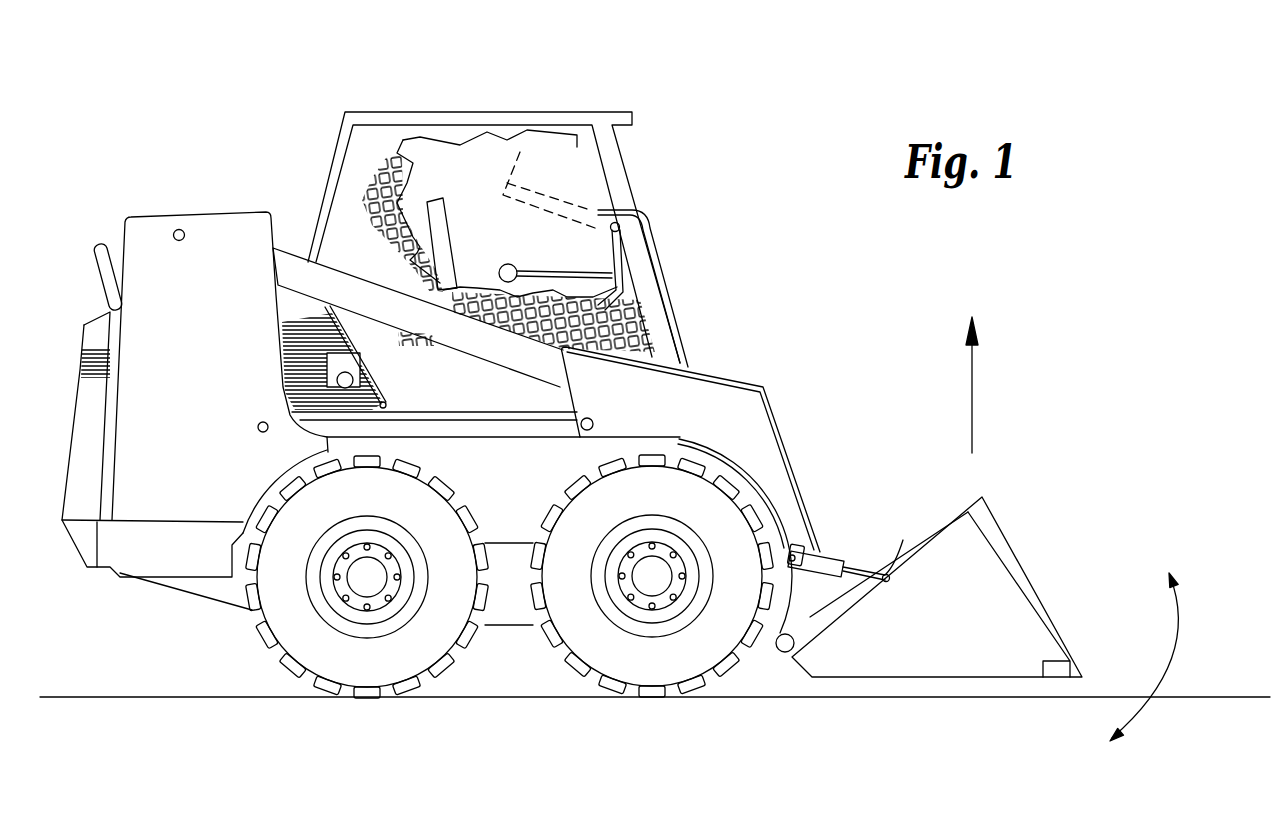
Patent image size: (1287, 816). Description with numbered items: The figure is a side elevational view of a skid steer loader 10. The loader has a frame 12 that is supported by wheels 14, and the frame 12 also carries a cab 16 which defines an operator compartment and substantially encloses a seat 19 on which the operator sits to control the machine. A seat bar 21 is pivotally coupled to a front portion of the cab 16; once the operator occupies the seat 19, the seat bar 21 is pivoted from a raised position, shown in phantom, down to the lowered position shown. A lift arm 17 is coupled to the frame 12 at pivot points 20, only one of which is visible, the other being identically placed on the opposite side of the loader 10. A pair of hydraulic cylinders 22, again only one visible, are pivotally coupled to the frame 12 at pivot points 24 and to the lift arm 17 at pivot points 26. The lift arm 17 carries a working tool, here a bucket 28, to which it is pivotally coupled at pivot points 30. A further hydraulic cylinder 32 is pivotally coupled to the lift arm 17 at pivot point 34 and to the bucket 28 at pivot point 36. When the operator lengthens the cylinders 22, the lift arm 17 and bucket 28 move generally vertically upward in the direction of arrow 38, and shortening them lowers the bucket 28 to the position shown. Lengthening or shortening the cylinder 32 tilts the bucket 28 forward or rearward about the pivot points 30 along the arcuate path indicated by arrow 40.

The skid steer loader 10 is at (581, 418).
The frame 12 is at (287, 449).
The wheels 14 is at (510, 623).
The cab 16 is at (498, 206).
The lift arm 17 is at (610, 440).
The seat 19 is at (437, 167).
The pivot points 20 is at (220, 326).
The seat bar 21 is at (624, 265).
The hydraulic cylinders 22 is at (525, 366).
The pivot points 24 is at (213, 534).
The pivot points 26 is at (695, 381).
The bucket 28 is at (956, 587).
The pivot points 30 is at (773, 712).
The hydraulic cylinder 32 is at (845, 533).
The pivot point 34 is at (828, 513).
The pivot point 36 is at (916, 529).
The arrow 38 is at (1014, 385).
The arrow 40 is at (1194, 657).